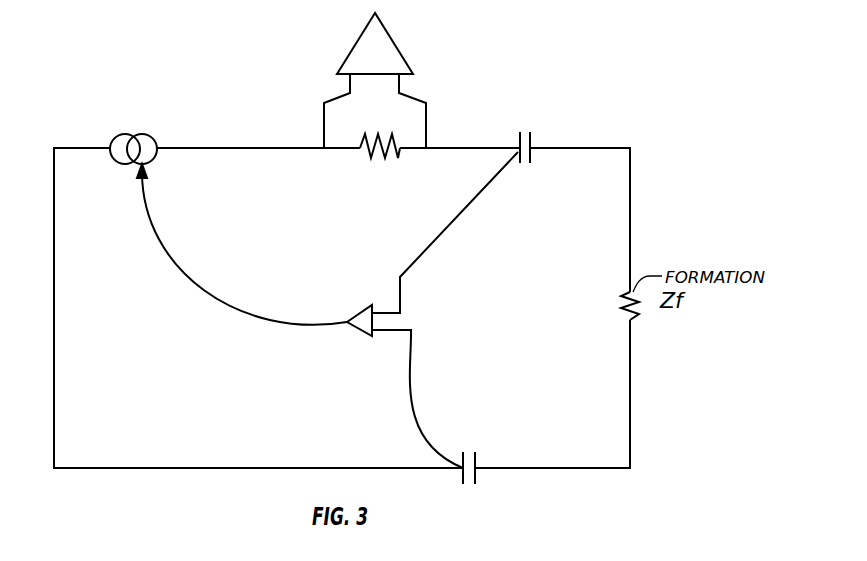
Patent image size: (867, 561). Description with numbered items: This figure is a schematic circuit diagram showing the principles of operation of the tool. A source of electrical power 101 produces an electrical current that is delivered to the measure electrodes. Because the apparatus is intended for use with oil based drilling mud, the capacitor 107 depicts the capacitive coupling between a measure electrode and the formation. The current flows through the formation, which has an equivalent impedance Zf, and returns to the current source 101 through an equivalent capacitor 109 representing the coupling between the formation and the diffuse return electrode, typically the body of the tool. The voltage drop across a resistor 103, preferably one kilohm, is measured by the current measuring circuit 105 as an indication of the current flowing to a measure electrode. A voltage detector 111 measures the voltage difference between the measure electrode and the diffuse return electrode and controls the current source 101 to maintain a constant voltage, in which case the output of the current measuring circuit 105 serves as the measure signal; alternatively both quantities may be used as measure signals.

The source of electrical power 101 is at (143, 133).
The resistor 103 is at (377, 152).
The current measuring circuit 105 is at (399, 43).
The capacitor 107 is at (532, 137).
The equivalent capacitor 109 is at (477, 462).
The voltage detector 111 is at (365, 306).